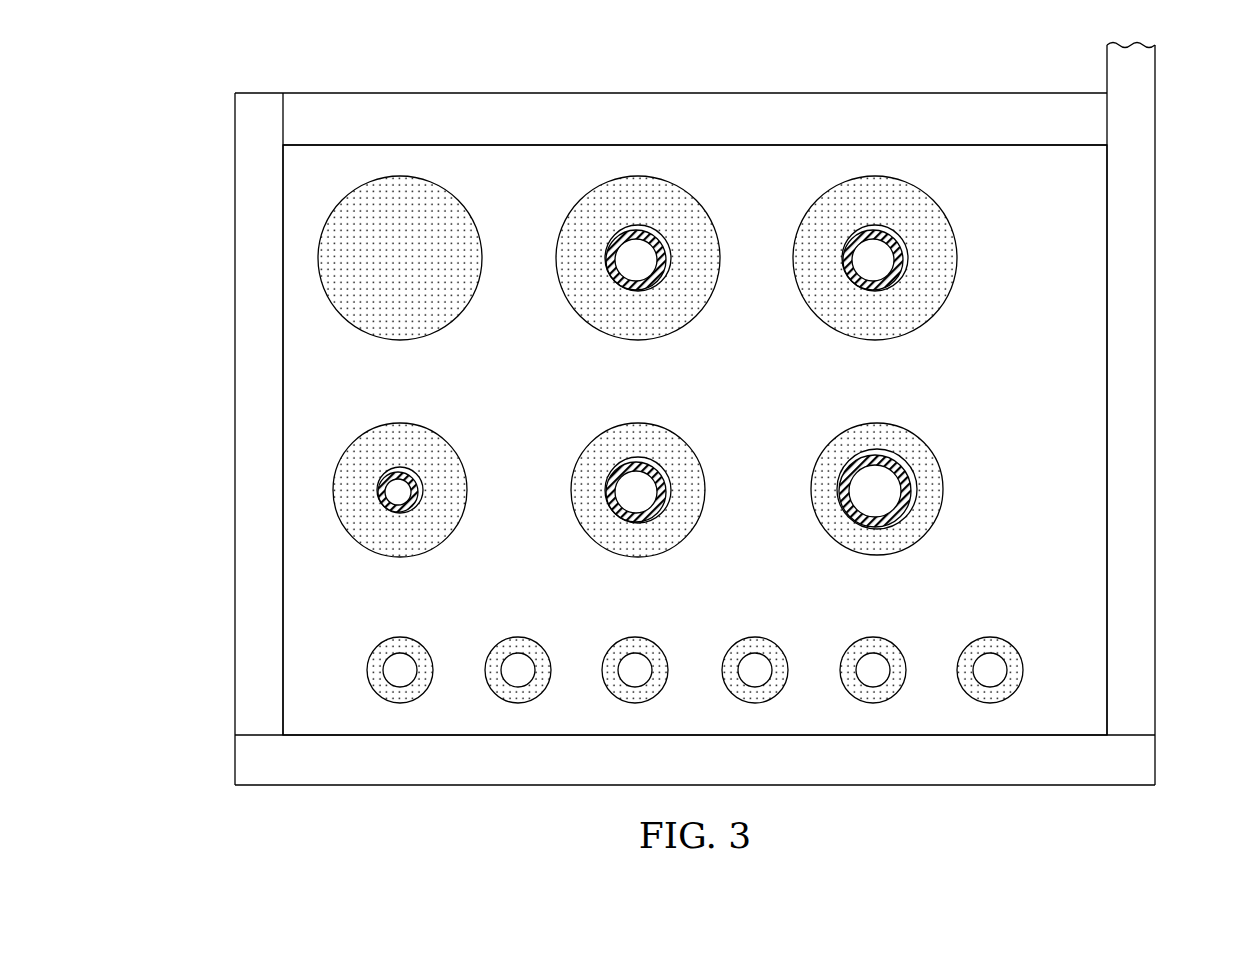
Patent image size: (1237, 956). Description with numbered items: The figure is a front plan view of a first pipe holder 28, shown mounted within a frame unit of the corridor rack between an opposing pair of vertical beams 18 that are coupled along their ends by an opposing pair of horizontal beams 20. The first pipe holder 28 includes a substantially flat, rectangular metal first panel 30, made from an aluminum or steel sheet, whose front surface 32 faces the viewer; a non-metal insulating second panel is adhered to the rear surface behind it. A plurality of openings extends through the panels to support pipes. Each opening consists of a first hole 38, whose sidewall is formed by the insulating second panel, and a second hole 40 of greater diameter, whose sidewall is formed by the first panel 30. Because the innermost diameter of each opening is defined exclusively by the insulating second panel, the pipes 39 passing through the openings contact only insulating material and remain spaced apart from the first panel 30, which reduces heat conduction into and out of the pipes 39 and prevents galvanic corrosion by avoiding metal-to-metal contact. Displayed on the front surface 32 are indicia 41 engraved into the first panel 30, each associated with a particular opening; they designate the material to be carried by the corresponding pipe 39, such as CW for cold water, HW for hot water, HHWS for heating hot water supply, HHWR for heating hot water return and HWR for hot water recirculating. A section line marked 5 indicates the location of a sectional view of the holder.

The section line 5- 5 is at (876, 78).
The vertical beam 18 is at (251, 421).
The horizontal beam 20 is at (527, 108).
The first pipe holder 28 is at (1188, 171).
The first panel 30 is at (1012, 424).
The front surface 32 is at (1075, 341).
The first hole 38 is at (636, 240).
The pipe 39 is at (896, 250).
The second hole 40 is at (417, 178).
The indicia 41 is at (681, 358).